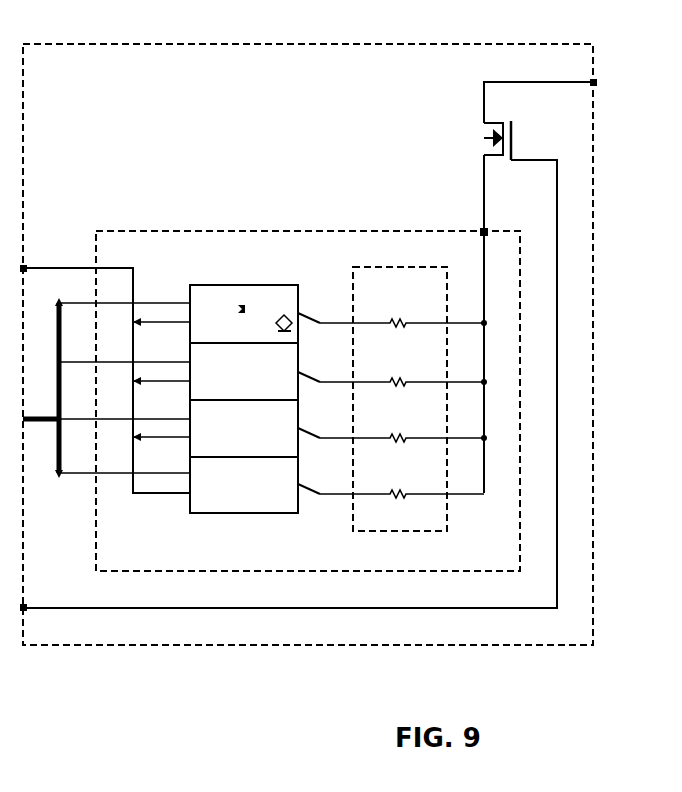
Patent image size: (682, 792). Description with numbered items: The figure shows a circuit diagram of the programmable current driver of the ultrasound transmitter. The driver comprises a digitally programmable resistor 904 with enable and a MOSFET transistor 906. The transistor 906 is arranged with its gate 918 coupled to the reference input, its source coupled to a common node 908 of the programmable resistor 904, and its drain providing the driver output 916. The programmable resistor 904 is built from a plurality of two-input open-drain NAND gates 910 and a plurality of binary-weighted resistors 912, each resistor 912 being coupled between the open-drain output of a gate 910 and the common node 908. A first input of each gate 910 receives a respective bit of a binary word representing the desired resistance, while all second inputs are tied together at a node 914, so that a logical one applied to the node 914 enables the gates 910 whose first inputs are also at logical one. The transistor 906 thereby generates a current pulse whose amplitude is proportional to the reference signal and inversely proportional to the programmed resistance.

The digitally programmable resistor 904 is at (165, 231).
The MOSFET transistor 906 is at (484, 138).
The common node 908 is at (482, 230).
The 2-input open-drain NAND gate 910 is at (190, 513).
The resistor 912 is at (447, 531).
The node 914 is at (25, 267).
The driver output 916 is at (592, 84).
The gate 918 is at (25, 606).